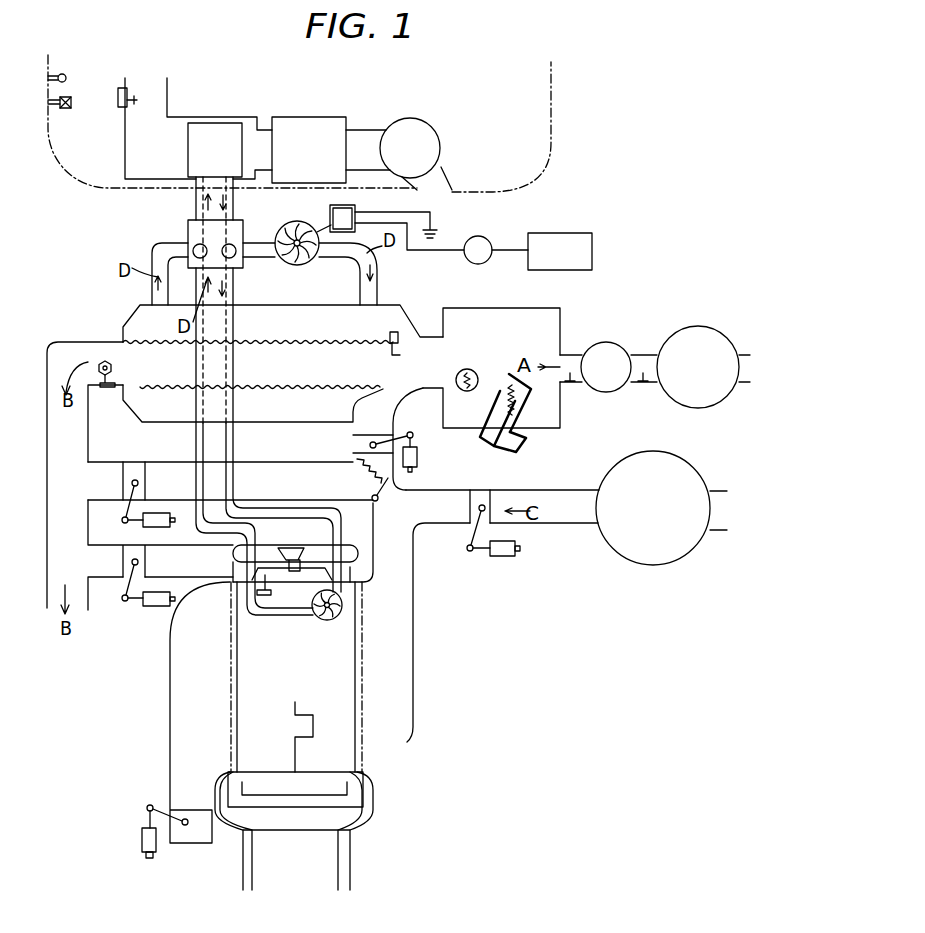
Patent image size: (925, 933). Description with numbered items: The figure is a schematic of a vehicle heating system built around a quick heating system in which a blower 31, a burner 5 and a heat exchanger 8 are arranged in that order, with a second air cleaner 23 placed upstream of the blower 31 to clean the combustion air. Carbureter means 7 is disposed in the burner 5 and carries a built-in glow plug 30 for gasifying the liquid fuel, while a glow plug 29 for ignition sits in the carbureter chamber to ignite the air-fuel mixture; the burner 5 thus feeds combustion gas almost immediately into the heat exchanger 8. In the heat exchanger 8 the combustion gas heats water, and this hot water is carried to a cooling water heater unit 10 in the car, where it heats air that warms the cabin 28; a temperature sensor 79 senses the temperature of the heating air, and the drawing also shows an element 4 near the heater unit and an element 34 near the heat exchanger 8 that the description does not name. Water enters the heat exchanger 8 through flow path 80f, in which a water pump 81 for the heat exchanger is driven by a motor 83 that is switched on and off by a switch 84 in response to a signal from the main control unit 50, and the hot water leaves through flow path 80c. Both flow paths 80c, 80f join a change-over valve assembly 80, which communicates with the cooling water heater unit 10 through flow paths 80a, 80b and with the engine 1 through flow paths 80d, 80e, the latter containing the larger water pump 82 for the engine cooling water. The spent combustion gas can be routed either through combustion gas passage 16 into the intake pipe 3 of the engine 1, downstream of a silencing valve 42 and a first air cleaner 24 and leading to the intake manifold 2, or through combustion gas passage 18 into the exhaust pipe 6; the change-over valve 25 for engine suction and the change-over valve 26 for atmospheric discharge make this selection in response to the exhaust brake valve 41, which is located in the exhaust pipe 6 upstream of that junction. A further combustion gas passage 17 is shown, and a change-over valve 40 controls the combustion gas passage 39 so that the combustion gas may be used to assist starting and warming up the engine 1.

The engine 1 is at (340, 731).
The intake manifold 2 is at (400, 652).
The intake pipe 3 is at (572, 523).
The control unit 4 is at (308, 127).
The burner 5 is at (538, 308).
The exhaust pipe 6 is at (185, 755).
The carbureter means 7 is at (540, 428).
The heat exchanger 8 is at (323, 317).
The cooling water heater unit 10 is at (225, 130).
The combustion gas passage 16 is at (60, 435).
The combustion gas passage 17 is at (637, 355).
The combustion gas passage 18 is at (62, 547).
The second air cleaner 23 is at (683, 337).
The first air cleaner 24 is at (625, 548).
The change-over valve for engine suction 25 is at (132, 467).
The change-over valve for atmospheric discharge 26 is at (125, 563).
The cabin 28 is at (467, 128).
The glow plug for ignition 29 is at (470, 368).
The glow plug for gasification 30 is at (520, 408).
The blower 31 is at (603, 342).
The temperature sensor 34 is at (110, 362).
The combustion gas passage 39 is at (393, 407).
The change-over valve for the combustion gas passage 40 is at (363, 450).
The exhaust brake valve 41 is at (197, 810).
The silencing valve 42 is at (478, 498).
The main control unit 50 is at (592, 252).
The temperature sensor 79 is at (137, 93).
The change-over valve assembly 80 is at (188, 229).
The flow path 80a is at (197, 205).
The flow path 80b is at (233, 205).
The flow path 80c is at (167, 243).
The flow path 80d is at (197, 297).
The flow path 80e is at (236, 285).
The flow path 80f is at (263, 252).
The water pump for the heat exchanger 81 is at (300, 220).
The water pump for the engine 82 is at (340, 603).
The motor 83 is at (343, 205).
The switch 84 is at (482, 256).